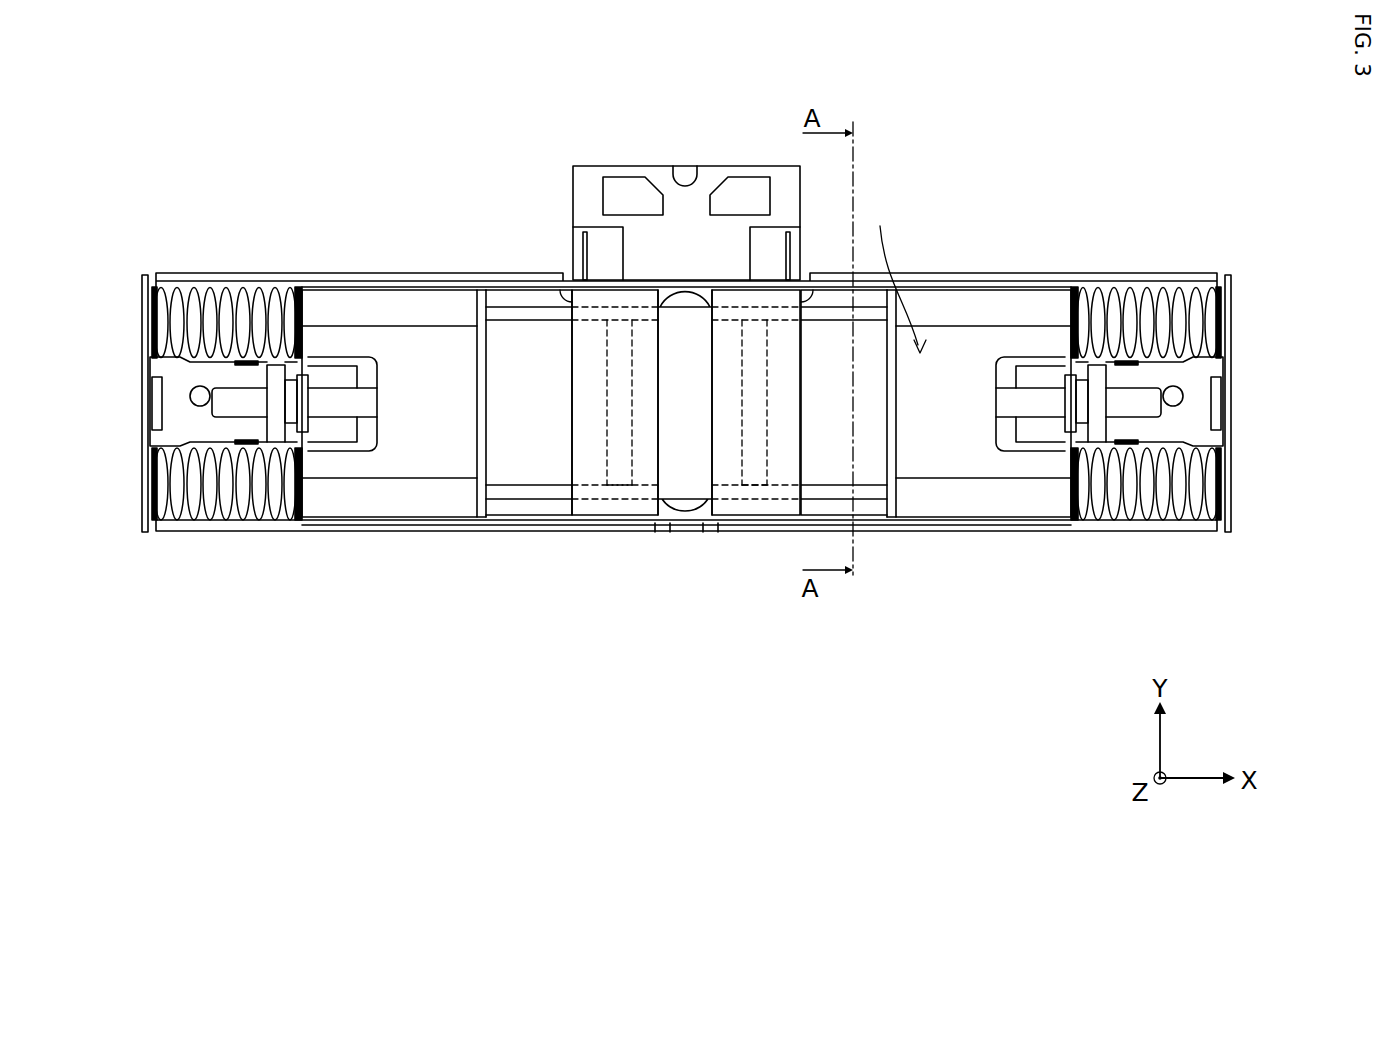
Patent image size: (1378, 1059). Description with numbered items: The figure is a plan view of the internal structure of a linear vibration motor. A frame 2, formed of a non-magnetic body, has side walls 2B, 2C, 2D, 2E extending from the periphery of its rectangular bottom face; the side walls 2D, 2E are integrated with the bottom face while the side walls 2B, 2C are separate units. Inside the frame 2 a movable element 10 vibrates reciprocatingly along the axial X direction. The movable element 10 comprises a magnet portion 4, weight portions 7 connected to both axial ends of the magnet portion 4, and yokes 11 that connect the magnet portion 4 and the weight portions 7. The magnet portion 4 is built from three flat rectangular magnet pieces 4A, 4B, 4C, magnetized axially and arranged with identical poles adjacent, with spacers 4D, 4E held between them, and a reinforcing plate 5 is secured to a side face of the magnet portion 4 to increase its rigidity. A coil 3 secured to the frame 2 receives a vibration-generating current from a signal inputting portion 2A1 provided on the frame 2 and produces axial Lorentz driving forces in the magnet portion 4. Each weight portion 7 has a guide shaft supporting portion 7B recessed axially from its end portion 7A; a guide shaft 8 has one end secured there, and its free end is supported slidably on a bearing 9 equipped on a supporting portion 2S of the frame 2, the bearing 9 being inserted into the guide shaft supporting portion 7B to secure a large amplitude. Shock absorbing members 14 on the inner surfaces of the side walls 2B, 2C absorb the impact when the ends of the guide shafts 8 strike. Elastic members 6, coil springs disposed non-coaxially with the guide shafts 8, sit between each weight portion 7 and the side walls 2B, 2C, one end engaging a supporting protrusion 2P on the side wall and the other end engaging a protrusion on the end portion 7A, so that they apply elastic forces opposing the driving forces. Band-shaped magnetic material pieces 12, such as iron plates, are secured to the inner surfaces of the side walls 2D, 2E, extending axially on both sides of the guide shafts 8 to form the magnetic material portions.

The frame 2 is at (1158, 550).
The signal inputting portion 2A1 is at (597, 174).
The side wall 2B is at (1232, 522).
The side wall 2C is at (141, 516).
The side wall 2D is at (420, 281).
The side wall 2E is at (420, 528).
The supporting protrusion 2P is at (166, 288).
The supporting portion 2S is at (205, 375).
The coil 3 is at (684, 535).
The magnet portion 4 is at (683, 497).
The magnet piece 4A is at (553, 475).
The magnet piece 4B is at (687, 473).
The magnet piece 4C is at (805, 478).
The spacer 4D is at (632, 482).
The spacer 4E is at (757, 473).
The reinforcing plate 5 is at (524, 306).
The elastic member 6 is at (240, 290).
The weight portion 7 is at (448, 350).
The end portion of weight portion 7A is at (297, 306).
The guide shaft supporting portion 7B is at (372, 360).
The guide shaft 8 is at (333, 388).
The bearing 9 is at (312, 432).
The movable element 10 is at (893, 276).
The yoke 11 is at (484, 505).
The magnetic material piece 12 is at (376, 395).
The shock absorbing member 14 is at (172, 395).